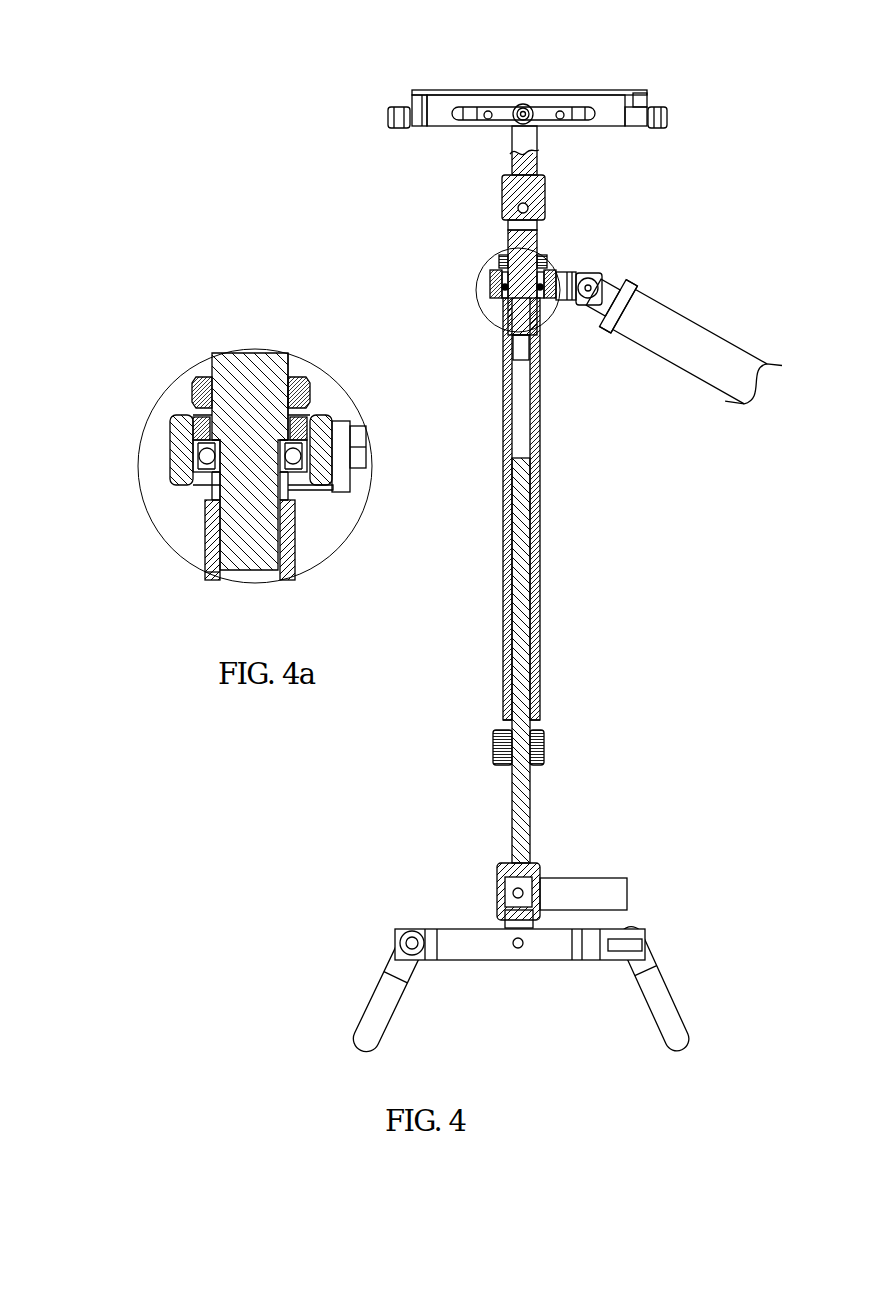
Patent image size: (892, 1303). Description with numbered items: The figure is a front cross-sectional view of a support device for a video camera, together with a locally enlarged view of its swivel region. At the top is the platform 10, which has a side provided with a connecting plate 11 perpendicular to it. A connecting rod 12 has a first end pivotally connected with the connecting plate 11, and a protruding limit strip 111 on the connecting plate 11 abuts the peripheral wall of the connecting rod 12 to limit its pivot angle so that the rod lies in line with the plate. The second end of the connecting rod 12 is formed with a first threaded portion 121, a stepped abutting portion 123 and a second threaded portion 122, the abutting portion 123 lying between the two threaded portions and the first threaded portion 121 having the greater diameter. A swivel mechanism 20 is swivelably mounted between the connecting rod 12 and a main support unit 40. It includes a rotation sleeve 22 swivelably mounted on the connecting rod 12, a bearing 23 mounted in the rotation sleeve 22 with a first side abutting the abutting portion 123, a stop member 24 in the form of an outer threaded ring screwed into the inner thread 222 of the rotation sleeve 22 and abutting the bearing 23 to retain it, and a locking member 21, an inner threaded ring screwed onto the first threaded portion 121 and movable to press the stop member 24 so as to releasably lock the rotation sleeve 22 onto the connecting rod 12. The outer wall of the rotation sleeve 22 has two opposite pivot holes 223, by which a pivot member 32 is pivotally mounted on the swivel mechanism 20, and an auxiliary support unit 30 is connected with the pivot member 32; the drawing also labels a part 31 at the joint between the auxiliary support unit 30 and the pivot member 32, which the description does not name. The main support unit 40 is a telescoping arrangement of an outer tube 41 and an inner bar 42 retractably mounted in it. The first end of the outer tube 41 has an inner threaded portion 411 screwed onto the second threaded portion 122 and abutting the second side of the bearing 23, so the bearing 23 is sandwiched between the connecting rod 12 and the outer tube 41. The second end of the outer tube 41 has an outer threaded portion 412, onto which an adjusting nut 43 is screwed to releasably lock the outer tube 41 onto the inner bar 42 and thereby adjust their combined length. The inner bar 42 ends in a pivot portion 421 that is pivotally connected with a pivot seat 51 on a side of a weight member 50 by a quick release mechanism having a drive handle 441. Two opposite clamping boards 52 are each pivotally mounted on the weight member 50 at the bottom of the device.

In FIG. 4, the platform 10 is at (466, 84).
In FIG. 4, the connecting plate 11 is at (540, 161).
In FIG. 4, the protruding limit strip 111 is at (505, 226).
In FIG. 4, the connecting rod 12 is at (537, 232).
In FIG. 4a, the connecting rod 12 is at (277, 353).
In FIG. 4a, the first threaded portion 121 is at (303, 375).
In FIG. 4a, the second threaded portion 122 is at (208, 574).
In FIG. 4a, the stepped abutting portion 123 is at (310, 447).
In FIG. 4a, the swivel mechanism 20 is at (158, 402).
In FIG. 4, the locking member 21 is at (500, 258).
In FIG. 4a, the locking member 21 is at (192, 384).
In FIG. 4, the rotation sleeve 22 is at (497, 290).
In FIG. 4a, the rotation sleeve 22 is at (205, 482).
In FIG. 4a, the inner thread 222 is at (303, 418).
In FIG. 4a, the pivot holes 223 is at (294, 492).
In FIG. 4, the bearing 23 is at (492, 300).
In FIG. 4a, the bearing 23 is at (172, 440).
In FIG. 4a, the stop member 24 is at (187, 423).
In FIG. 4, the auxiliary support unit 30 is at (700, 310).
In FIG. 4, the handle collar 31 is at (601, 306).
In FIG. 4, the pivot member 32 is at (590, 277).
In FIG. 4a, the pivot member 32 is at (360, 457).
In FIG. 4, the main support unit 40 is at (577, 580).
In FIG. 4, the outer tube 41 is at (541, 395).
In FIG. 4a, the outer tube 41 is at (295, 565).
In FIG. 4a, the inner threaded portion 411 is at (292, 502).
In FIG. 4, the outer threaded portion 412 is at (503, 722).
In FIG. 4, the inner bar 42 is at (540, 483).
In FIG. 4, the pivot portion 421 is at (497, 865).
In FIG. 4, the adjusting nut 43 is at (546, 747).
In FIG. 4, the drive handle 441 is at (565, 883).
In FIG. 4, the weight member 50 is at (540, 963).
In FIG. 4, the pivot seat 51 is at (507, 920).
In FIG. 4, the clamping boards 52 is at (385, 997).